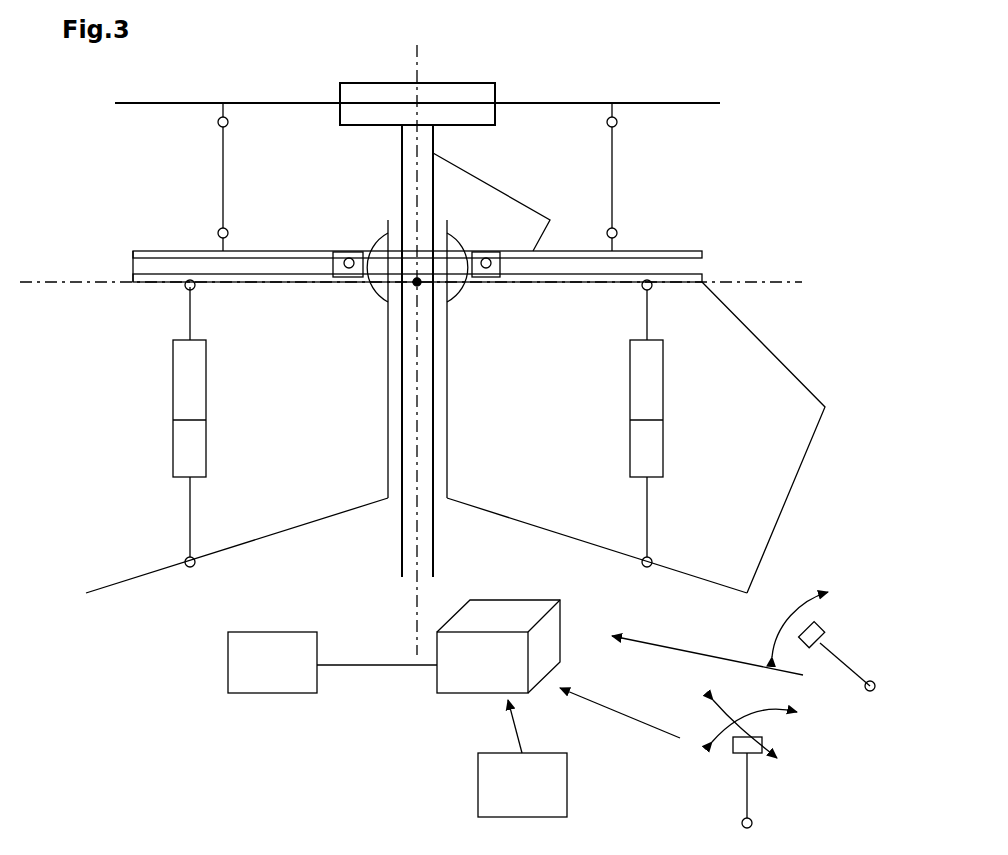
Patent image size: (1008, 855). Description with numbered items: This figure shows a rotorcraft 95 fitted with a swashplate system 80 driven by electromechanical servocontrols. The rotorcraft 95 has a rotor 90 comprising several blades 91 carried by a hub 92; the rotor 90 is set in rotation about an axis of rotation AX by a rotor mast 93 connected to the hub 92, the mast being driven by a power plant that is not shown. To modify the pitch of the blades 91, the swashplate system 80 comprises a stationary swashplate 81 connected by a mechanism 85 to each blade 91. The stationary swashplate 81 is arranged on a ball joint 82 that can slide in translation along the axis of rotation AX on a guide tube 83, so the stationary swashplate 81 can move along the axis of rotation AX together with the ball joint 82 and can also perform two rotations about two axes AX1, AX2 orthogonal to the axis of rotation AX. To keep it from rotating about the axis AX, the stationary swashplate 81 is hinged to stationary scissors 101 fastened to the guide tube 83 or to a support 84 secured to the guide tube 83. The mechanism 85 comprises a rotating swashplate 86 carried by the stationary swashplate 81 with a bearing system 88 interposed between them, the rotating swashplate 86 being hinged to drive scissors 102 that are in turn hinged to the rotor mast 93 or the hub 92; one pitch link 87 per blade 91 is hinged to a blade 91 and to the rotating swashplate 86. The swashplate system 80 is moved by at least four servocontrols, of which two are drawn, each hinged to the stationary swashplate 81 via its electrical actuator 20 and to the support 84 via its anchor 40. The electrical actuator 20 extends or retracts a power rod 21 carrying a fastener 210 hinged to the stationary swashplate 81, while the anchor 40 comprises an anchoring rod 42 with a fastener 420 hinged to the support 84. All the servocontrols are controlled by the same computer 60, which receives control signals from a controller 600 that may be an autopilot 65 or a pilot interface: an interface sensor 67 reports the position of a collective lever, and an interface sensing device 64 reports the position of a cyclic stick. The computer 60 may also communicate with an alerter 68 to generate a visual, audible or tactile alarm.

The electrical actuator 20 is at (215, 388).
The power rod 21 is at (190, 325).
The fastener 210 is at (188, 288).
The anchor 40 is at (140, 452).
The anchoring rod 42 is at (190, 500).
The fastener 420 is at (190, 567).
The computer 60 is at (437, 678).
The interface sensing device 64 is at (742, 824).
The autopilot 65 is at (522, 758).
The interface sensor 67 is at (870, 692).
The alerter 68 is at (332, 662).
The controller 600 is at (478, 768).
The swashplate system 80 is at (95, 272).
The stationary swashplate 81 is at (135, 275).
The ball joint 82 is at (378, 243).
The guide tube 83 is at (388, 428).
The support 84 is at (108, 587).
The mechanism 85 is at (165, 160).
The rotating swashplate 86 is at (190, 251).
The pitch link 87 is at (223, 145).
The bearing system 88 is at (347, 252).
The rotor 90 is at (530, 80).
The blade 91 is at (275, 103).
The hub 92 is at (380, 92).
The rotor mast 93 is at (402, 173).
The rotorcraft 95 is at (148, 637).
The stationary scissors 101 is at (805, 450).
The drive scissors 102 is at (530, 210).
The axis of rotation AX is at (417, 60).
The first tilt axis AX1 is at (417, 284).
The second tilt axis AX2 is at (785, 282).